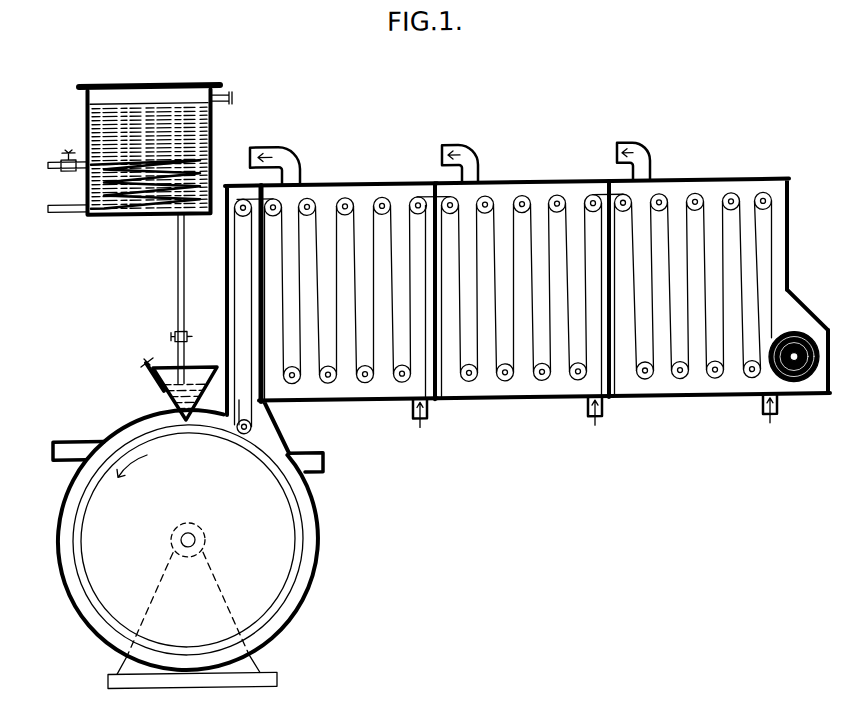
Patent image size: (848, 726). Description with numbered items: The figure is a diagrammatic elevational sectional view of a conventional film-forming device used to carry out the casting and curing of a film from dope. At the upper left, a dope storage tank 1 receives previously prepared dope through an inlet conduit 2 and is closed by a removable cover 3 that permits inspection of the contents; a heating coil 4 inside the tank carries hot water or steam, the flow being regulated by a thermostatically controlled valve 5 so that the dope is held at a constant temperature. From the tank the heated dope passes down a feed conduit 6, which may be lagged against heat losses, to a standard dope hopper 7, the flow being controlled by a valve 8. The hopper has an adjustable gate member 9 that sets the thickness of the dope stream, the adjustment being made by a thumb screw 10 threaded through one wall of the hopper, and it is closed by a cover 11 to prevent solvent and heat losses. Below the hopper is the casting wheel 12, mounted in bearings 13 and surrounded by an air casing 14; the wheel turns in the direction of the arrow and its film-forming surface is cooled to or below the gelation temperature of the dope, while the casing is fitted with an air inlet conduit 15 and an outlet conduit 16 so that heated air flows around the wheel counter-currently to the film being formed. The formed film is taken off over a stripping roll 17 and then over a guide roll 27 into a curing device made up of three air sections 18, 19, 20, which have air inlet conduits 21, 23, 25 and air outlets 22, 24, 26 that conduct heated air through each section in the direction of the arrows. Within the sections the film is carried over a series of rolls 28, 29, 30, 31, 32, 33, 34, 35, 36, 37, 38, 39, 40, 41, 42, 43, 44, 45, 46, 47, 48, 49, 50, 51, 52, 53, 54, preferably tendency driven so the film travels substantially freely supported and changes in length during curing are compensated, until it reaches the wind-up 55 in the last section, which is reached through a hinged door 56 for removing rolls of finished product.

The dope storage tank 1 is at (88, 114).
The inlet conduit 2 is at (226, 93).
The removable cover 3 is at (106, 82).
The heating coil 4 is at (122, 213).
The thermostatically controlled valve 5 is at (66, 167).
The feed conduit 6 is at (178, 264).
The dope hopper 7 is at (150, 378).
The valve 8 is at (176, 333).
The adjustable gate member 9 is at (152, 413).
The thumb screw 10 is at (147, 359).
The cover 11 is at (199, 367).
The casting wheel 12 is at (104, 624).
The bearings 13 is at (198, 533).
The air casing 14 is at (320, 518).
The air inlet conduit 15 is at (324, 469).
The outlet conduit 16 is at (86, 439).
The stripping roll 17 is at (253, 428).
The air section 18 is at (335, 185).
The air section 19 is at (547, 185).
The air section 20 is at (715, 185).
The air inlet conduit 21 is at (421, 421).
The air outlet 22 is at (252, 149).
The air inlet conduit 23 is at (598, 421).
The air outlet 24 is at (455, 148).
The air inlet conduit 25 is at (777, 412).
The air outlet 26 is at (628, 148).
The guide roll 27 is at (237, 212).
The roll 28 is at (273, 199).
The roll 29 is at (292, 385).
The roll 30 is at (308, 200).
The roll 31 is at (328, 385).
The roll 32 is at (346, 200).
The roll 33 is at (365, 385).
The roll 34 is at (383, 200).
The roll 35 is at (402, 385).
The roll 36 is at (418, 200).
The roll 37 is at (447, 200).
The roll 38 is at (469, 385).
The roll 39 is at (486, 200).
The roll 40 is at (505, 385).
The roll 41 is at (523, 200).
The roll 42 is at (542, 385).
The roll 43 is at (558, 200).
The roll 44 is at (578, 385).
The roll 45 is at (593, 200).
The roll 46 is at (615, 204).
The roll 47 is at (645, 385).
The roll 48 is at (660, 200).
The roll 49 is at (680, 385).
The roll 50 is at (696, 200).
The roll 51 is at (715, 385).
The roll 52 is at (732, 200).
The roll 53 is at (752, 385).
The roll 54 is at (765, 200).
The wind-up 55 is at (806, 383).
The hinged door 56 is at (800, 310).